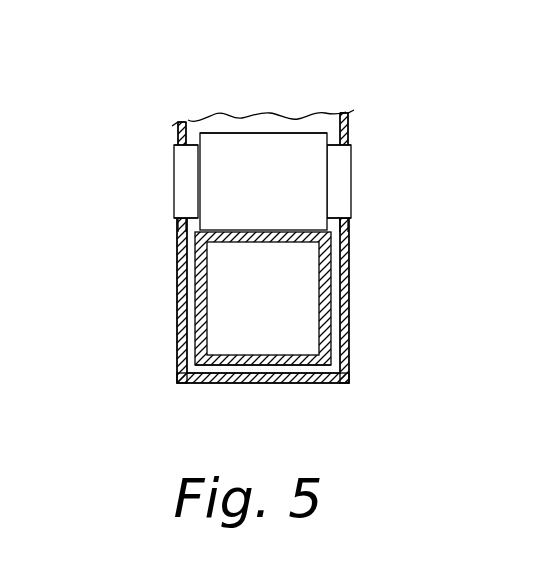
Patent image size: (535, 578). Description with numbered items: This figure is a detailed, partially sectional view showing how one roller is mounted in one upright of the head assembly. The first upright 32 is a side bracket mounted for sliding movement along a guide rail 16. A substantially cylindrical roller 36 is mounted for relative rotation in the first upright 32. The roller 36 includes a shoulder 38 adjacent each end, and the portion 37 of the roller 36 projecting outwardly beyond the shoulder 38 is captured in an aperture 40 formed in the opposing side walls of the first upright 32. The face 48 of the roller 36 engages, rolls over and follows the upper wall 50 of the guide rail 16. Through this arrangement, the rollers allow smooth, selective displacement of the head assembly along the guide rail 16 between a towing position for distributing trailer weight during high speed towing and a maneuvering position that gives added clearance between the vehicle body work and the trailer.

The guide rail 16 is at (262, 364).
The first upright 32 is at (177, 358).
The roller 36 is at (283, 133).
The portion of roller projecting beyond shoulder 37 is at (177, 197).
The shoulder 38 is at (182, 219).
The aperture 40 is at (178, 139).
The face of roller 48 is at (248, 177).
The upper wall of guide rail 50 is at (267, 230).